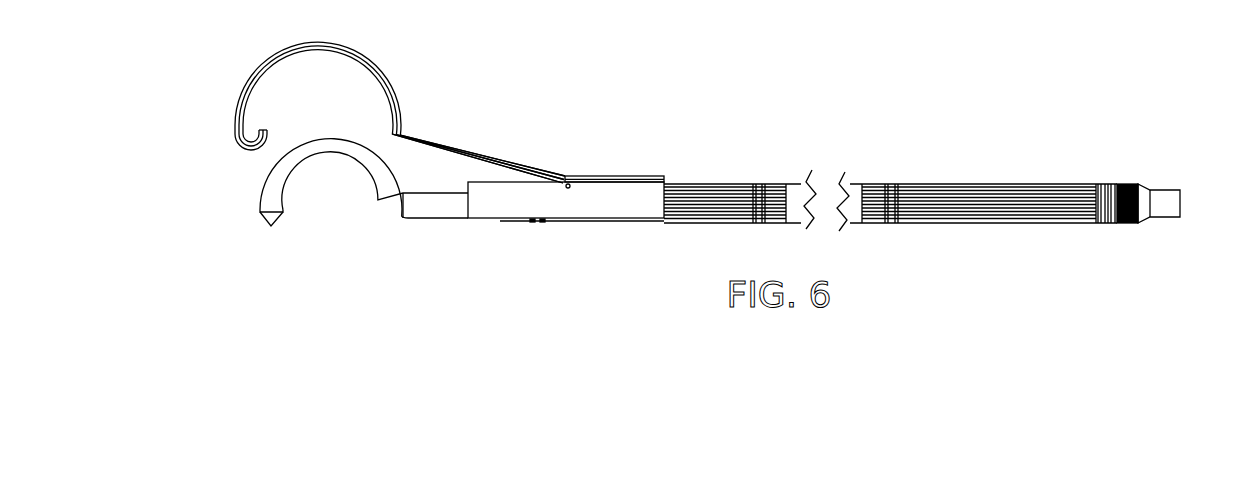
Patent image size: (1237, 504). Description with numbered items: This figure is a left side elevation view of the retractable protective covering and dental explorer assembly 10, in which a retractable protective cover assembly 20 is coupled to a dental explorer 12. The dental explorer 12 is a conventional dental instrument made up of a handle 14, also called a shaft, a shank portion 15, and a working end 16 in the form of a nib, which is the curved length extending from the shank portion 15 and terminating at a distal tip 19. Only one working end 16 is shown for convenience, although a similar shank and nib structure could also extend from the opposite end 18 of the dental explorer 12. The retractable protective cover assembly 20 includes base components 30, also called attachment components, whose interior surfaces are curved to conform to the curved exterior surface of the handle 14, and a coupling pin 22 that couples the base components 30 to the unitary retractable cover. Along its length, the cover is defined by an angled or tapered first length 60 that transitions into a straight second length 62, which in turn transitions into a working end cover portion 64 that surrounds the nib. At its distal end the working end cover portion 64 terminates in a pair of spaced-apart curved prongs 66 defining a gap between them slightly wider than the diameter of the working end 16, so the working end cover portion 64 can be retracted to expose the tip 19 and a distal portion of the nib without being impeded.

The retractable protective covering and dental explorer assembly 10 is at (712, 113).
The dental explorer 12 is at (763, 182).
The handle 14 is at (945, 184).
The shank portion 15 is at (393, 238).
The working end 16 is at (317, 215).
The opposite end 18 is at (1165, 182).
The distal tip 19 is at (268, 225).
The retractable protective cover assembly 20 is at (516, 118).
The coupling pin 22 is at (571, 184).
The base component 30 is at (508, 208).
The first length 60 is at (617, 177).
The second length 62 is at (497, 153).
The working end cover portion 64 is at (375, 61).
The curved prongs 66 is at (246, 149).